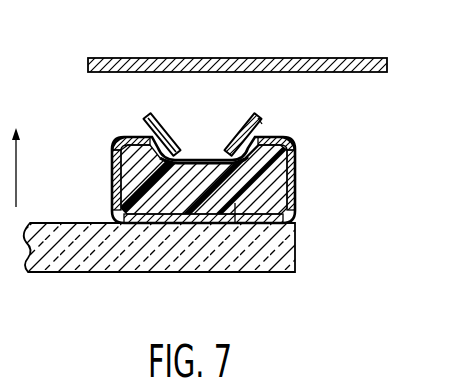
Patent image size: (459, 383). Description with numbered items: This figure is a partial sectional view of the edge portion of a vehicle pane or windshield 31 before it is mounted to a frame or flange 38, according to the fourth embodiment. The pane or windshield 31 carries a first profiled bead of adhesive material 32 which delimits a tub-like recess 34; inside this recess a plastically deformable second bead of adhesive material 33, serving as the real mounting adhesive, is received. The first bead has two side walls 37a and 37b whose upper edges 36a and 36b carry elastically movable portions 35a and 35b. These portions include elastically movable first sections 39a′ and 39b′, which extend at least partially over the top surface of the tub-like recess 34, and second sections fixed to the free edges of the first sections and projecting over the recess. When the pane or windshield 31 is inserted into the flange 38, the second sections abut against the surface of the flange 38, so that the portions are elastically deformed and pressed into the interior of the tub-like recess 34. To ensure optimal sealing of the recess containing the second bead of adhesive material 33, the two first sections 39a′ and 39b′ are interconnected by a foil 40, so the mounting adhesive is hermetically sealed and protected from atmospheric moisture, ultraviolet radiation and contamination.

The pane or windshield 31 is at (52, 268).
The first profiled bead of adhesive material 32 is at (304, 210).
The second bead of adhesive material 33 is at (235, 223).
The tub-like recess 34 is at (132, 203).
The elastically movable portion 35a is at (290, 122).
The elastically movable portion 35b is at (112, 121).
The upper edge 36a is at (295, 143).
The upper edge 36b is at (115, 145).
The side wall 37a is at (296, 190).
The side wall 37b is at (115, 172).
The flange 38 is at (182, 58).
The first section 39a′ is at (265, 130).
The first section 39b′ is at (143, 135).
The foil 40 is at (205, 156).